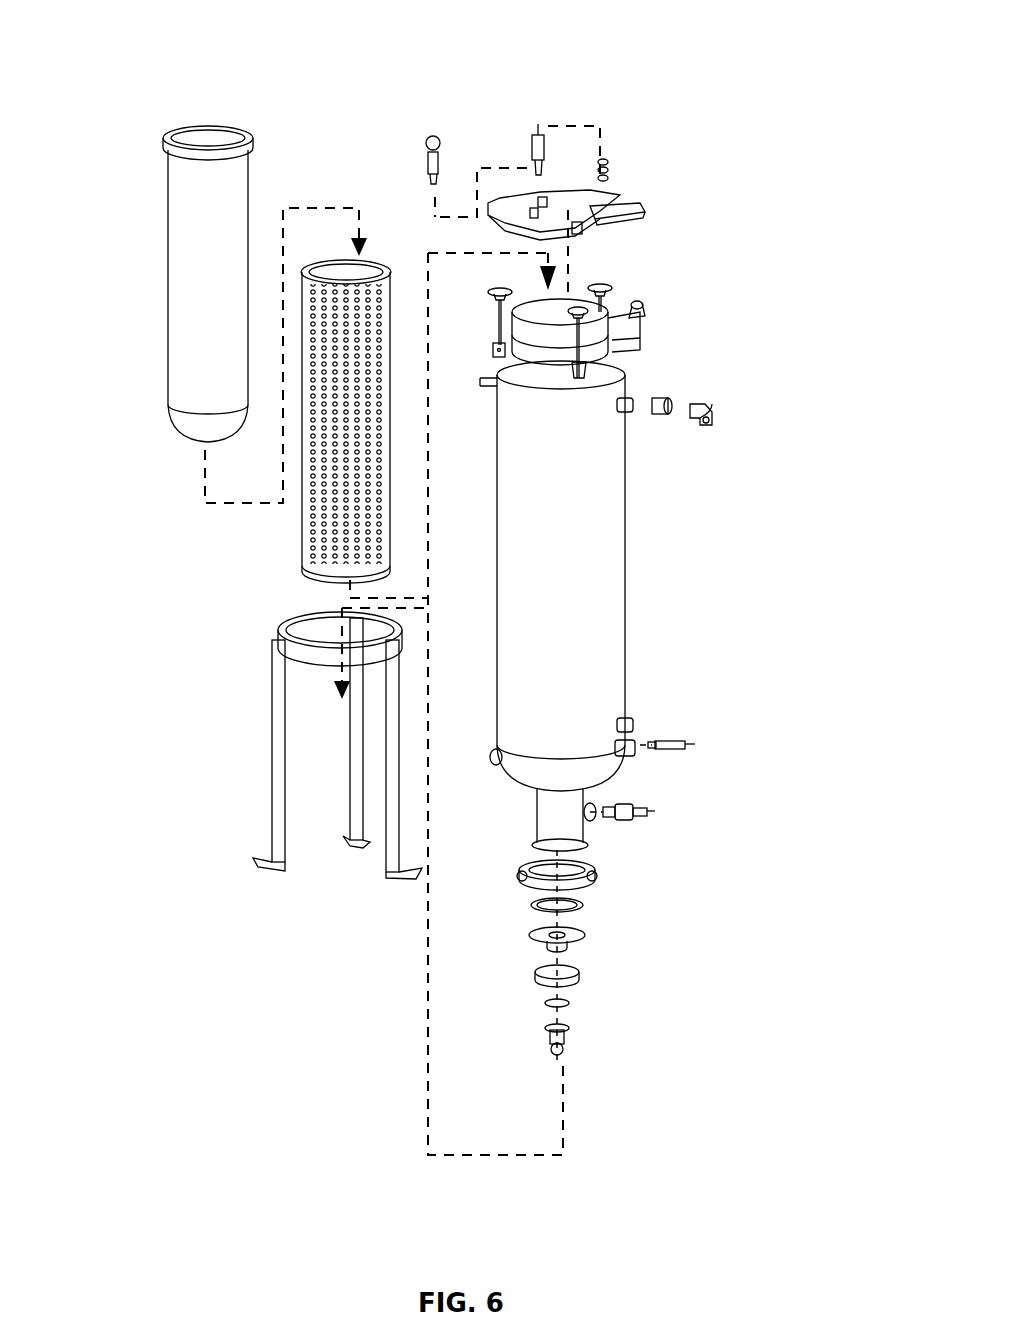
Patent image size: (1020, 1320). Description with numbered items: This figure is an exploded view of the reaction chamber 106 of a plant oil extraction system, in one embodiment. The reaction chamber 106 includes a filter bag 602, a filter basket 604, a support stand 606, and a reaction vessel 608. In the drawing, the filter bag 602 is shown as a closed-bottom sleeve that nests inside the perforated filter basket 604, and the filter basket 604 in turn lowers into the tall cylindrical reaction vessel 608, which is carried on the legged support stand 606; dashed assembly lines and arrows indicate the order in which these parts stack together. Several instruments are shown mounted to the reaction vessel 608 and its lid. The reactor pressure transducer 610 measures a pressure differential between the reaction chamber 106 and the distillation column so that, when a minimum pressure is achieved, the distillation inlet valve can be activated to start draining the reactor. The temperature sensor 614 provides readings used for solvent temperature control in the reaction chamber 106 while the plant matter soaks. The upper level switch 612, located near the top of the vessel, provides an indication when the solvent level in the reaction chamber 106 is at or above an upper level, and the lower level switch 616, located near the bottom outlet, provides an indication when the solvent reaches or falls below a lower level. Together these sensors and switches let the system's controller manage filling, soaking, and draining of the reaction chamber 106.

The reaction chamber 106 is at (786, 56).
The filter bag 602 is at (168, 290).
The filter basket 604 is at (315, 528).
The support stand 606 is at (282, 675).
The reaction vessel 608 is at (608, 644).
The reactor pressure transducer 610 is at (535, 145).
The upper level switch 612 is at (600, 318).
The temperature sensor 614 is at (690, 738).
The lower level switch 616 is at (645, 817).